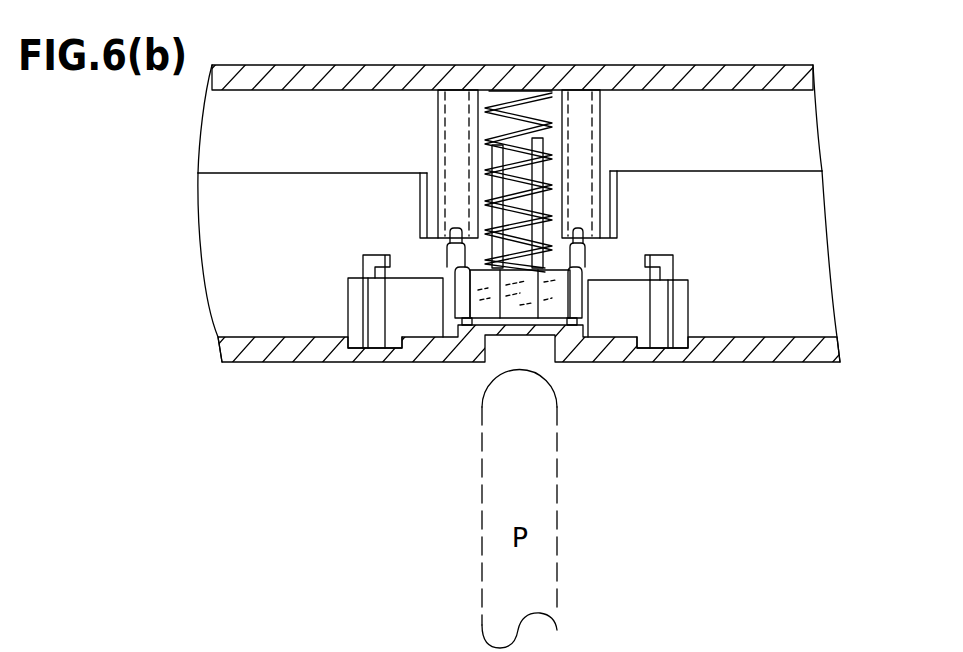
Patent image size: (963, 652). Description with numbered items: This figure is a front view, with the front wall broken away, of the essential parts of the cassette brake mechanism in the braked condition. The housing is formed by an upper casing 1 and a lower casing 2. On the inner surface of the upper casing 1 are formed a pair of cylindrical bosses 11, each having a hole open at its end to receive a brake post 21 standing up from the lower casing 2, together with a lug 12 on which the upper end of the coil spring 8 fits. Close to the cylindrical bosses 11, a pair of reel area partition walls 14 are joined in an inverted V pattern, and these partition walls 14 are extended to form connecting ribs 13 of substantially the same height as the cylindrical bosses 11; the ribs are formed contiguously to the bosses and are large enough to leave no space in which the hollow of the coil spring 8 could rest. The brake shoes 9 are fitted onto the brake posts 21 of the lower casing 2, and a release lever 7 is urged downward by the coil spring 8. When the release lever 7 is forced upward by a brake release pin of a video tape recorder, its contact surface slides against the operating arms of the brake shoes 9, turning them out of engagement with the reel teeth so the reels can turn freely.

The upper casing 1 is at (845, 140).
The lower casing 2 is at (860, 258).
The release lever 7 is at (487, 308).
The coil spring 8 is at (503, 90).
The brake shoe 9 is at (377, 310).
The cylindrical boss 11 is at (455, 108).
The lug 12 is at (560, 97).
The connecting rib 13 is at (427, 207).
The reel area partition wall 14 is at (298, 115).
The brake post 21 is at (456, 253).